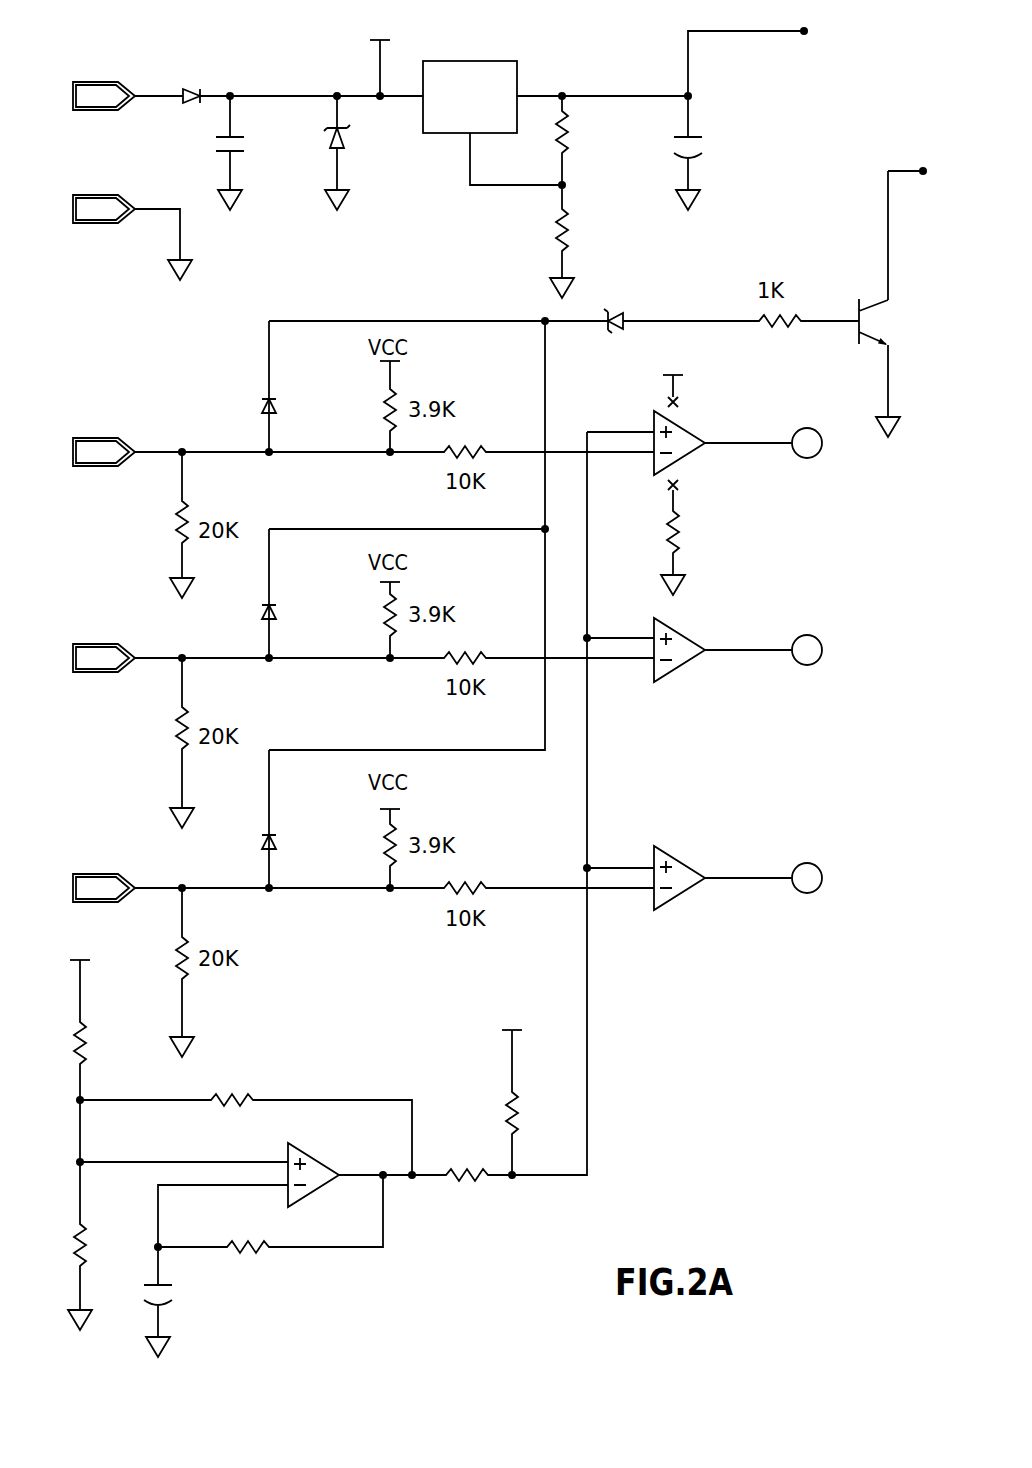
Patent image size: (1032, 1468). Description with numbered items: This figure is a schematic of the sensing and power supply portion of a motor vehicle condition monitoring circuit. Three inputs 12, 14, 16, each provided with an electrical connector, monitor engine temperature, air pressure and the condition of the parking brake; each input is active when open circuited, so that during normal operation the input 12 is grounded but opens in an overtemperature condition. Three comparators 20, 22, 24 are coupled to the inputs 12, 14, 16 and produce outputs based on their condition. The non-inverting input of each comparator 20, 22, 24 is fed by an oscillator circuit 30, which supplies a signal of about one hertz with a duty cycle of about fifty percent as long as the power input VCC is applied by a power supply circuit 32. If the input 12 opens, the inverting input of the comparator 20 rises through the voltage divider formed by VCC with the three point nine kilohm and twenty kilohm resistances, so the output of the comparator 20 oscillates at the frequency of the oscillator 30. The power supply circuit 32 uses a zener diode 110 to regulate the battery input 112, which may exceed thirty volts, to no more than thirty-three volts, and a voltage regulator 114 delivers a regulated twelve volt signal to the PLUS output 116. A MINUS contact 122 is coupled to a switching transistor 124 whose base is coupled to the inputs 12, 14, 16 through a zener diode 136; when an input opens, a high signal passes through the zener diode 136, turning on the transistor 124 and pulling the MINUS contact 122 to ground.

The input 12 is at (155, 453).
The input 14 is at (148, 660).
The input 16 is at (147, 890).
The comparator 20 is at (685, 445).
The comparator 22 is at (685, 655).
The comparator 24 is at (684, 885).
The oscillator circuit 30 is at (339, 1228).
The power supply circuit 32 is at (447, 150).
The zener diode 110 is at (325, 135).
The battery input 112 is at (160, 96).
The voltage regulator 114 is at (465, 72).
The PLUS output 116 is at (770, 33).
The MINUS contact 122 is at (888, 212).
The switching transistor 124 is at (870, 338).
The zener diode 136 is at (605, 335).